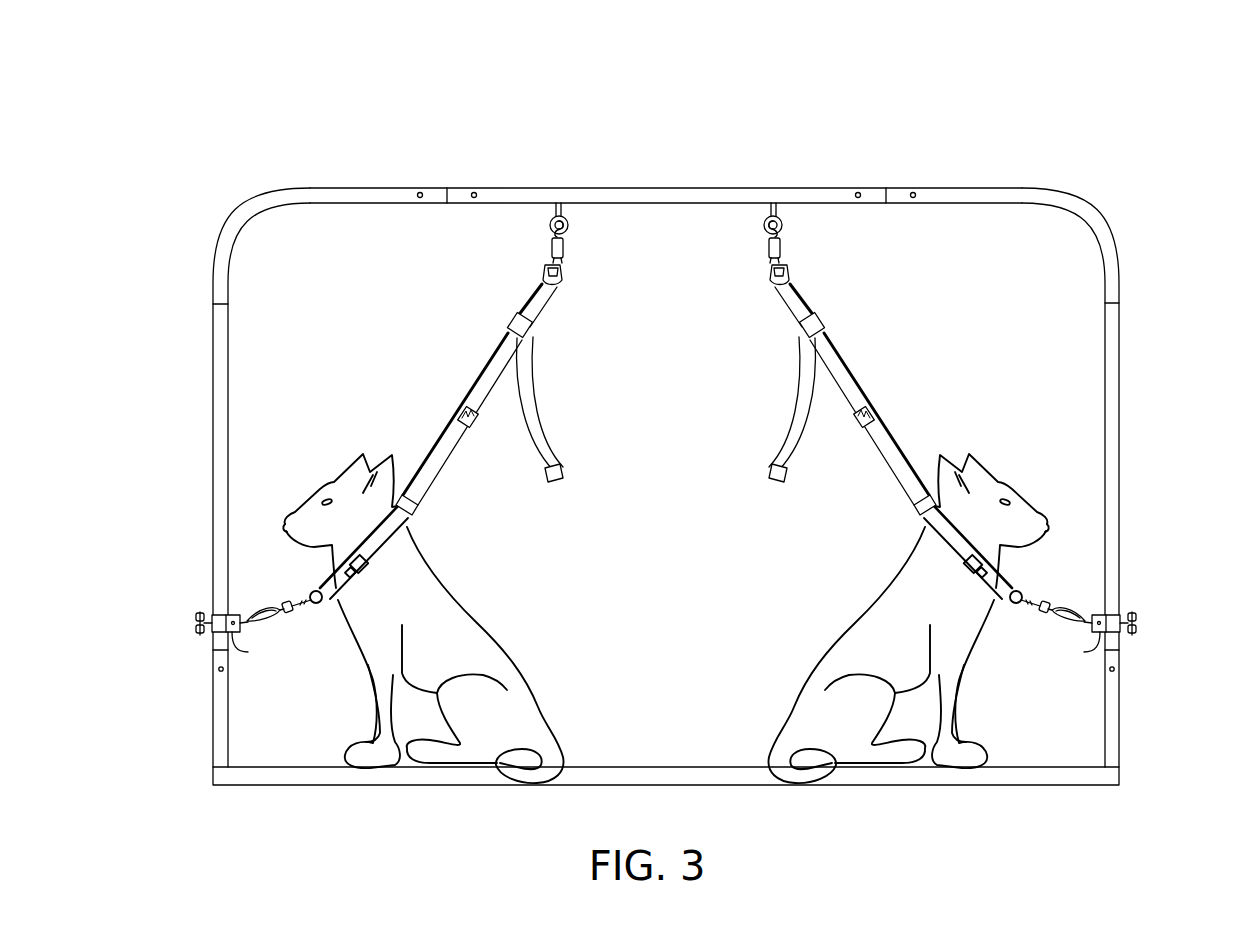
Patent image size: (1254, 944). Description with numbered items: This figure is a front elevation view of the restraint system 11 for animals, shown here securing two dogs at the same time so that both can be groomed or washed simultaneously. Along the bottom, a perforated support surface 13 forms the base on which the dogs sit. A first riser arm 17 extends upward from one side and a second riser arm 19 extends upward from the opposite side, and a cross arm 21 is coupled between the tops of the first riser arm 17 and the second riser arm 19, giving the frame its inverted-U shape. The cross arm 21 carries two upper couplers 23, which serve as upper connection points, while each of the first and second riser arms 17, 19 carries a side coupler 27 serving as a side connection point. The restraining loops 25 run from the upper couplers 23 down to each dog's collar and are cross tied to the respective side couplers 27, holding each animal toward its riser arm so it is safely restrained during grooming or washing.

The restraint system 11 is at (656, 456).
The perforated support surface 13 is at (905, 792).
The first riser arm 17 is at (213, 418).
The second riser arm 19 is at (1120, 470).
The cross arm 21 is at (677, 187).
The upper couplers 23 is at (569, 222).
The restraining loops 25 is at (545, 303).
The side couplers 27 is at (212, 622).